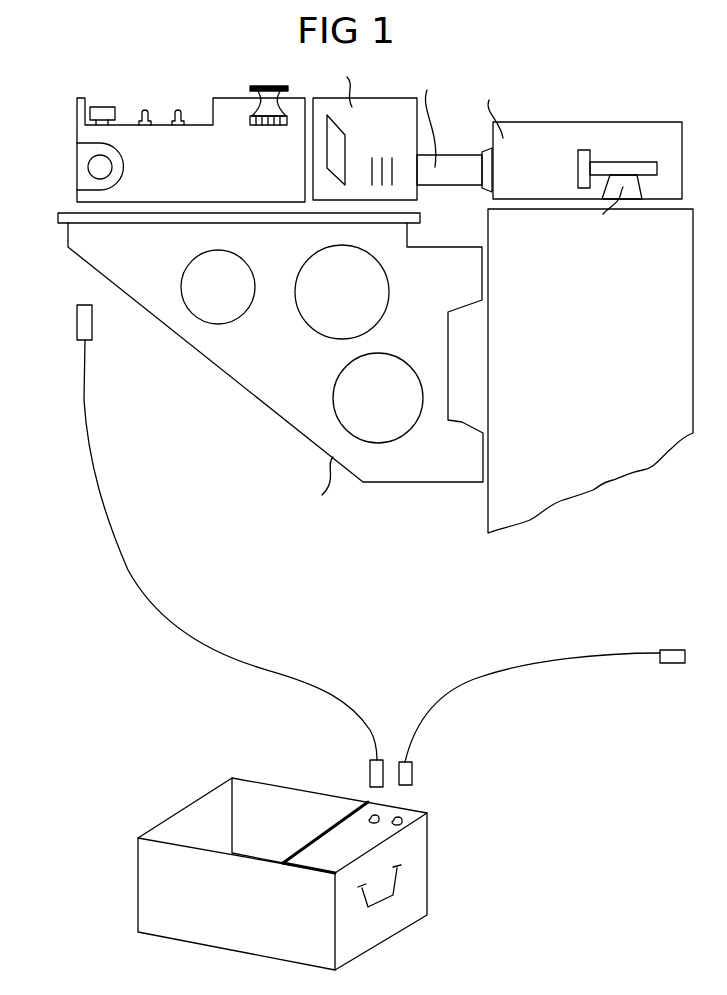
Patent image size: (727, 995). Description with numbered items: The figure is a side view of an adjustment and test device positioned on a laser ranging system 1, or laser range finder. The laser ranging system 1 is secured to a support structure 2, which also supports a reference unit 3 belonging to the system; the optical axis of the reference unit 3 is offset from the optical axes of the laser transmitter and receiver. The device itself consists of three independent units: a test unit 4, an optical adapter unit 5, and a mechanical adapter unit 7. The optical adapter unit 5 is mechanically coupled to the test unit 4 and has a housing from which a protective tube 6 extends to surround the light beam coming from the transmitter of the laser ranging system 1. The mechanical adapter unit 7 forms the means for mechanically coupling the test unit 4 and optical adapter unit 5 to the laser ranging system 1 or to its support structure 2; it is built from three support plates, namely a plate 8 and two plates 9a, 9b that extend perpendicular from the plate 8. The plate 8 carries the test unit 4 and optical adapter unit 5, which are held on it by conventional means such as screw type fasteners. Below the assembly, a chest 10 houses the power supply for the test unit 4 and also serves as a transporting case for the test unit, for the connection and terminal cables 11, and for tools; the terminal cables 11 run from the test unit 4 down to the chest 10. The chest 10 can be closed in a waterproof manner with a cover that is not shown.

The laser ranging system 1 is at (623, 137).
The support structure 2 is at (672, 303).
The reference unit 3 is at (650, 181).
The test unit 4 is at (197, 113).
The optical adapter unit 5 is at (390, 98).
The protective tube 6 is at (450, 170).
The mechanical adapter unit 7 is at (275, 371).
The support plate 8 is at (57, 215).
The support plate 9a is at (290, 385).
The support plate 9b is at (378, 398).
The chest 10 is at (188, 802).
The terminal cables 11 is at (430, 710).